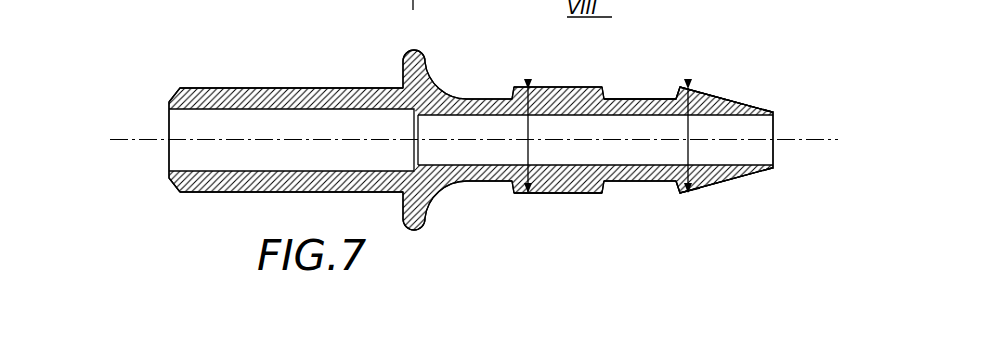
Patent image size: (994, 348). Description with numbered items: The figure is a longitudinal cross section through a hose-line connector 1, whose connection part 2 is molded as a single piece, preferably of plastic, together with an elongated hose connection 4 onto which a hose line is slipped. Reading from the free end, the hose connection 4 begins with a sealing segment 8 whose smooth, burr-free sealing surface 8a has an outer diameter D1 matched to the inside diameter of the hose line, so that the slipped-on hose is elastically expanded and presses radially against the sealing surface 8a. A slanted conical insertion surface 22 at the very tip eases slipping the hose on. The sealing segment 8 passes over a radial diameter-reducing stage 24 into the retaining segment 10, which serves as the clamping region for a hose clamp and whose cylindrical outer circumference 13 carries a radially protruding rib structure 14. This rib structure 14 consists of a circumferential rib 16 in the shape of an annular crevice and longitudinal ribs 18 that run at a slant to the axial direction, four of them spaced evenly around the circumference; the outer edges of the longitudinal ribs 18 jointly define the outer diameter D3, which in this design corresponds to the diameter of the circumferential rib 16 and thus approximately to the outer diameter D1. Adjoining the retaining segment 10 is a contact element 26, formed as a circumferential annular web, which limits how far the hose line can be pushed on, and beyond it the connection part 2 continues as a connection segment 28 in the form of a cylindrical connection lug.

The hose-line connector 1 is at (455, 284).
The connection part 2 is at (410, 98).
The hose connection 4 is at (491, 99).
The sealing segment 8 is at (701, 74).
The sealing surface 8a is at (676, 188).
The retaining segment 10 is at (643, 71).
The cylindrical outer circumference 13 is at (635, 97).
The rib structure 14 is at (565, 201).
The circumferential rib 16 is at (515, 88).
The longitudinal rib 18 is at (585, 88).
The slanted conical insertion surface 22 is at (738, 188).
The diameter-reducing stage 24 is at (668, 182).
The contact element 26 is at (408, 220).
The connection segment 28 is at (220, 192).
The outer diameter of the sealing segment D1 is at (691, 128).
The outer diameter of the longitudinal ribs D3 is at (532, 128).